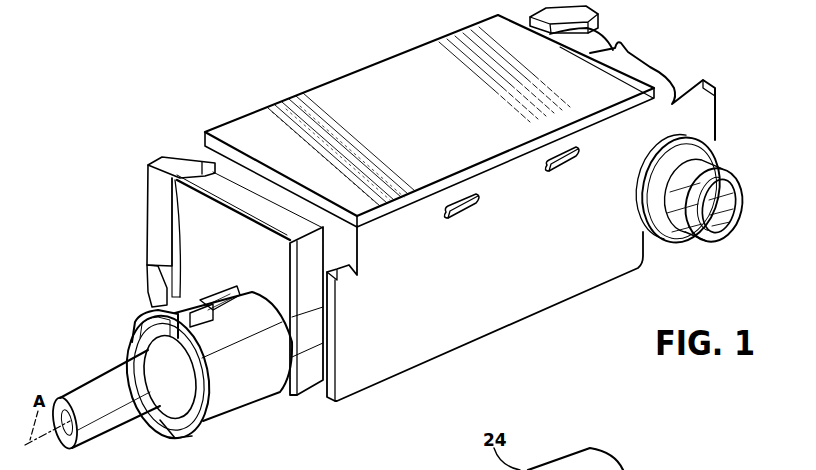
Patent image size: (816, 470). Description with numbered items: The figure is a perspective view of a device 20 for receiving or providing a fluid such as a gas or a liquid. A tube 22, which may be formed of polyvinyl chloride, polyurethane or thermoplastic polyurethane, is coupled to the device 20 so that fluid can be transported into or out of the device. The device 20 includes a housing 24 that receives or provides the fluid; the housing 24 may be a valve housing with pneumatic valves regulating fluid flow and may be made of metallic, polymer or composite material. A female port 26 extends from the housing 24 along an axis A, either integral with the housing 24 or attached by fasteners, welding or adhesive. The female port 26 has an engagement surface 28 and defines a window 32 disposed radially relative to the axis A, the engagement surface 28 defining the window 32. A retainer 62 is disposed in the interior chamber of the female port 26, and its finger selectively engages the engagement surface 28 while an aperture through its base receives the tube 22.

The device 20 is at (128, 72).
The tube 22 is at (117, 428).
The housing 24 is at (257, 128).
The female port 26 is at (163, 277).
The engagement surface 28 is at (201, 298).
The window 32 is at (221, 298).
The retainer 62 is at (133, 362).